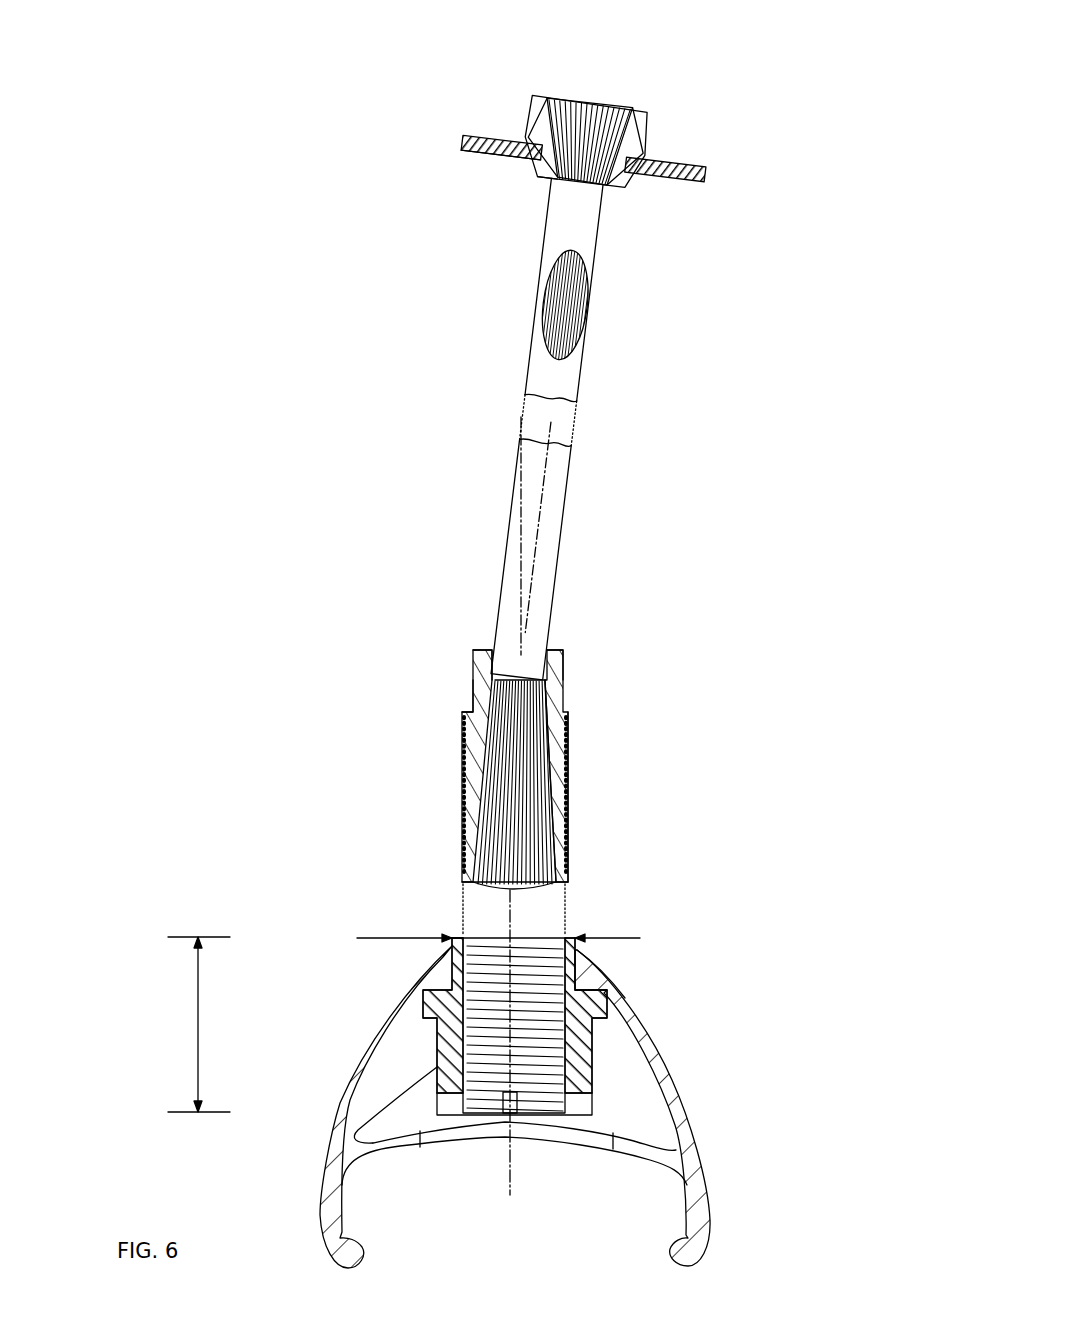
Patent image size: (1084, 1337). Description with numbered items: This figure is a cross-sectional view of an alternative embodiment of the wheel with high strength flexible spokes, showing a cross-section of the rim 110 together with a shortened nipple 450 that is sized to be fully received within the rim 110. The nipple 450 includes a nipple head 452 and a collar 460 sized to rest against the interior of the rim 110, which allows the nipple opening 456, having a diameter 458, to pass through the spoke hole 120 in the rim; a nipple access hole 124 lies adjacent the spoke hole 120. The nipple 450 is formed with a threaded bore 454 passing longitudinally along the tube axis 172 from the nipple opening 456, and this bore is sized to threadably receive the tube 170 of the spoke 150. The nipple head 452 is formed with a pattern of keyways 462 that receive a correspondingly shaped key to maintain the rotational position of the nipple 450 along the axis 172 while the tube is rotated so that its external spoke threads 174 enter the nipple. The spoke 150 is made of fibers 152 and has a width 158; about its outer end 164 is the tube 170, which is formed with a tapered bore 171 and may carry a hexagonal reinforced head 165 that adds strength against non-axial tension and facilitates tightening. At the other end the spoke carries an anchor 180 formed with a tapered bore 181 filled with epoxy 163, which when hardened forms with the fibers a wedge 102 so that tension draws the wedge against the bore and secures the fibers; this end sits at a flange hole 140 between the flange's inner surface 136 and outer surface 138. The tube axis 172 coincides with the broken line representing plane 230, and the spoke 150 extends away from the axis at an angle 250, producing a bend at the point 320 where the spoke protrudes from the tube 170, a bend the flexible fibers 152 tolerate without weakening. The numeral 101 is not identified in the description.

The bristle bundle top 101 is at (525, 680).
The wedge 102 is at (607, 187).
The rim 110 is at (693, 1153).
The spoke hole 120 is at (452, 960).
The nipple access hole 124 is at (607, 1142).
The inner surface 136 is at (477, 135).
The outer surface 138 is at (498, 155).
The flange hole 140 is at (540, 160).
The spoke 150 is at (540, 356).
The fibers 152 is at (517, 753).
The width 158 is at (486, 554).
The epoxy 163 is at (598, 102).
The outer end 164 is at (493, 663).
The reinforced head 165 is at (470, 692).
The tube 170 is at (465, 812).
The tapered bore 171 is at (550, 763).
The tube axis 172 is at (510, 1167).
The spoke threads 174 is at (568, 810).
The anchor 180 is at (628, 158).
The tapered bore 181 is at (545, 123).
The plane 230 is at (537, 515).
The angle 250 is at (501, 436).
The point 320 is at (609, 653).
The shortened nipple 450 is at (497, 1077).
The nipple head 452 is at (593, 1070).
The threaded bore 454 is at (198, 1012).
The nipple opening 456 is at (460, 933).
The diameter 458 is at (392, 940).
The collar 460 is at (580, 988).
The keyway 462 is at (447, 1110).